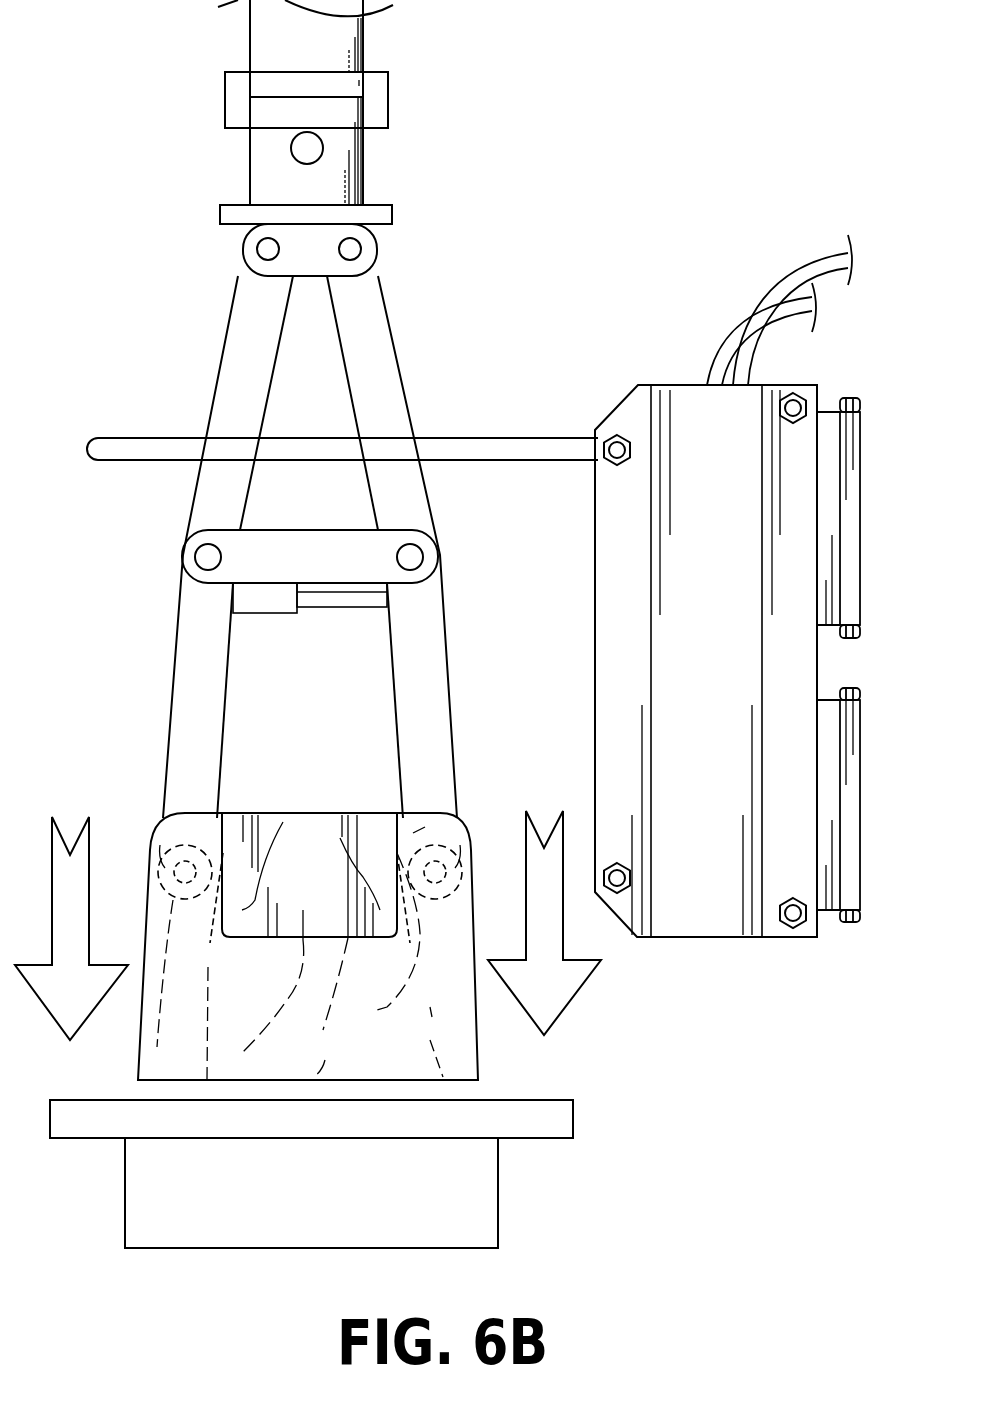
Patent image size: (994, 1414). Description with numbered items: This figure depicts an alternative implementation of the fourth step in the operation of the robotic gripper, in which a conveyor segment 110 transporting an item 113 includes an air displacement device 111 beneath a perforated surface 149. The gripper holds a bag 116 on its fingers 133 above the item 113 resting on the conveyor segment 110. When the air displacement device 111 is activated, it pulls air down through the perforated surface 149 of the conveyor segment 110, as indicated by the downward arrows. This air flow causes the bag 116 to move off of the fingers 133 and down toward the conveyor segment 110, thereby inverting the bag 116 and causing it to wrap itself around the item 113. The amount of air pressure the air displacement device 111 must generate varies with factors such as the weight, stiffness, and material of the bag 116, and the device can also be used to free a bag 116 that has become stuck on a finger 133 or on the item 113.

The conveyor segment 110 is at (590, 1226).
The air displacement device 111 is at (328, 1203).
The item 113 is at (330, 903).
The bag 116 is at (273, 1026).
The fingers 133 is at (218, 738).
The perforated surface 149 is at (328, 1130).